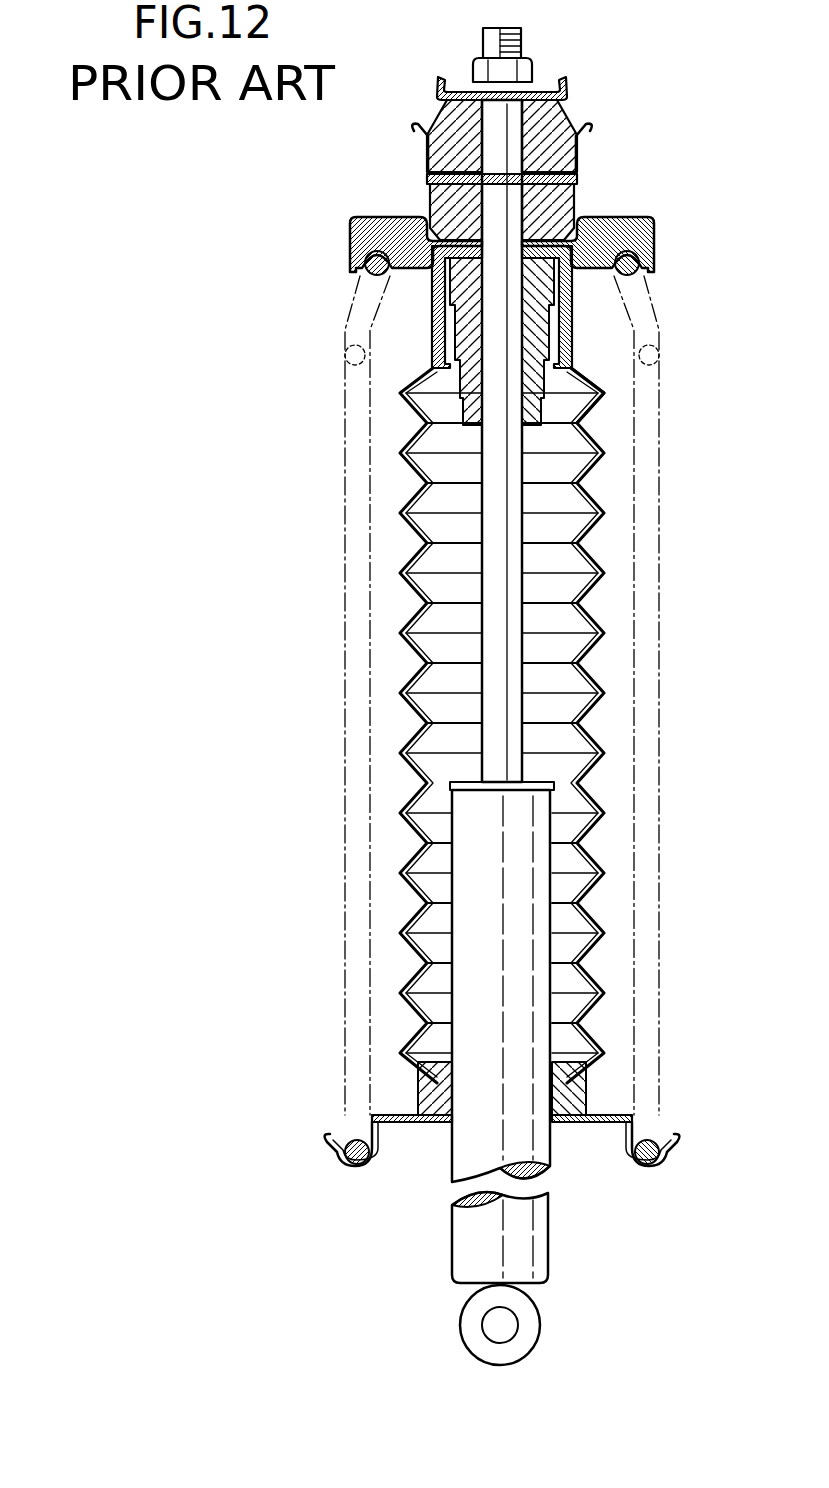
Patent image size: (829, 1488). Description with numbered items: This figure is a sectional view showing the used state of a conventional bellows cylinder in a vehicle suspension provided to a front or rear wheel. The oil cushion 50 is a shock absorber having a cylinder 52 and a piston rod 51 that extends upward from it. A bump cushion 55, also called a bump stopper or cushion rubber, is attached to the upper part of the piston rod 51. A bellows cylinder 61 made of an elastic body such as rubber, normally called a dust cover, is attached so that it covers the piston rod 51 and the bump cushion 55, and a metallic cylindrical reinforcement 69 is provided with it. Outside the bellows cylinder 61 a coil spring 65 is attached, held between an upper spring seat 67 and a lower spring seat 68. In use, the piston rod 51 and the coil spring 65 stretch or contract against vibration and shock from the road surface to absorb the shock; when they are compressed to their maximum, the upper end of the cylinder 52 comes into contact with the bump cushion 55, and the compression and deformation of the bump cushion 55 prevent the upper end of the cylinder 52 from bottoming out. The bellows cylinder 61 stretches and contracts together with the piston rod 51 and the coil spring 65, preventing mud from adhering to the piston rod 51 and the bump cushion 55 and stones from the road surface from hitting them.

The oil cushion 50 is at (553, 1241).
The piston rod 51 is at (515, 680).
The cylinder 52 is at (460, 1155).
The bump cushion 55 is at (460, 330).
The bellows cylinder 61 is at (597, 551).
The coil spring 65 is at (658, 592).
The upper spring seat 67 is at (596, 272).
The lower spring seat 68 is at (587, 1123).
The metallic cylindrical reinforcement 69 is at (601, 400).